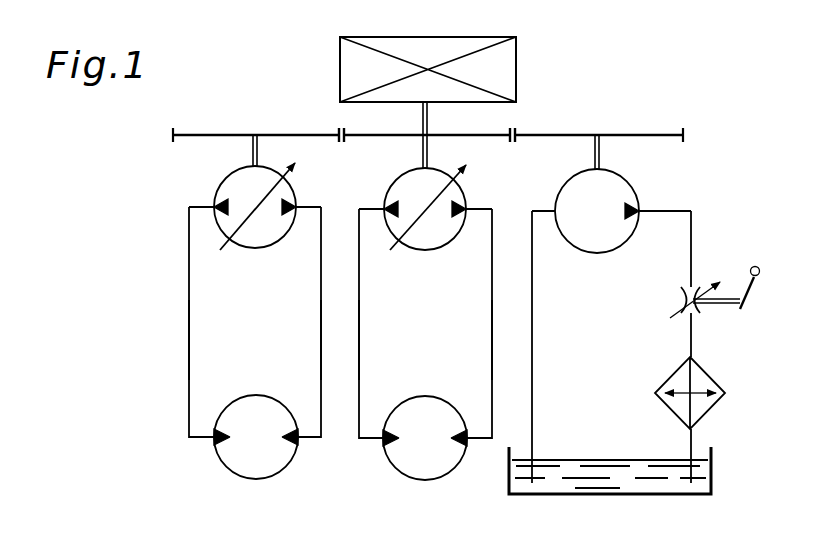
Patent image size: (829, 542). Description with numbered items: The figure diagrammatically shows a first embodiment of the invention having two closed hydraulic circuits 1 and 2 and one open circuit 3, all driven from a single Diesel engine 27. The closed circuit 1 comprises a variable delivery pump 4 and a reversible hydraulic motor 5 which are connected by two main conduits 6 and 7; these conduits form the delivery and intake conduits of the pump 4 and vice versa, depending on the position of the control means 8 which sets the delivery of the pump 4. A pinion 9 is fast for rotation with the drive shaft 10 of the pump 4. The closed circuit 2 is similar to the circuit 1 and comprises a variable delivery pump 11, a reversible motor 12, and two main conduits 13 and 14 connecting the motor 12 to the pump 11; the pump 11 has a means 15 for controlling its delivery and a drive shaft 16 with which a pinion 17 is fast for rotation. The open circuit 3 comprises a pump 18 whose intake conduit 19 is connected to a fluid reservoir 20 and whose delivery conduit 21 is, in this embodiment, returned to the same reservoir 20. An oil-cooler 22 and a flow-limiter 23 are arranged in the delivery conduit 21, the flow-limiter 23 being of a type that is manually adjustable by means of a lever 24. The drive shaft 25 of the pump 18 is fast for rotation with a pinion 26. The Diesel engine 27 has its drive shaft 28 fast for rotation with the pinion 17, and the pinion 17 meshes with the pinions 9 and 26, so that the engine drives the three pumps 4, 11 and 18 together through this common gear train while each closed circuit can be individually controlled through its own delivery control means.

The closed circuit 1 is at (320, 283).
The closed circuit 2 is at (491, 284).
The open circuit 3 is at (690, 265).
The variable delivery pump 4 is at (270, 249).
The reversible hydraulic motor 5 is at (256, 404).
The main conduit 6 is at (189, 343).
The main conduit 7 is at (321, 338).
The control means 8 is at (293, 167).
The pinion 9 is at (175, 134).
The drive shaft 10 is at (253, 153).
The variable delivery pump 11 is at (447, 243).
The reversible motor 12 is at (436, 384).
The main conduit 13 is at (359, 346).
The main conduit 14 is at (492, 345).
The delivery control means 15 is at (466, 168).
The drive shaft 16 is at (423, 156).
The pinion 17 is at (342, 130).
The pump 18 is at (628, 244).
The intake conduit 19 is at (532, 346).
The fluid reservoir 20 is at (713, 473).
The delivery conduit 21 is at (692, 348).
The oil-cooler 22 is at (706, 405).
The flow-limiter 23 is at (696, 306).
The lever 24 is at (749, 292).
The drive shaft 25 is at (595, 157).
The pinion 26 is at (676, 121).
The Diesel engine 27 is at (437, 32).
The drive shaft 28 is at (429, 118).